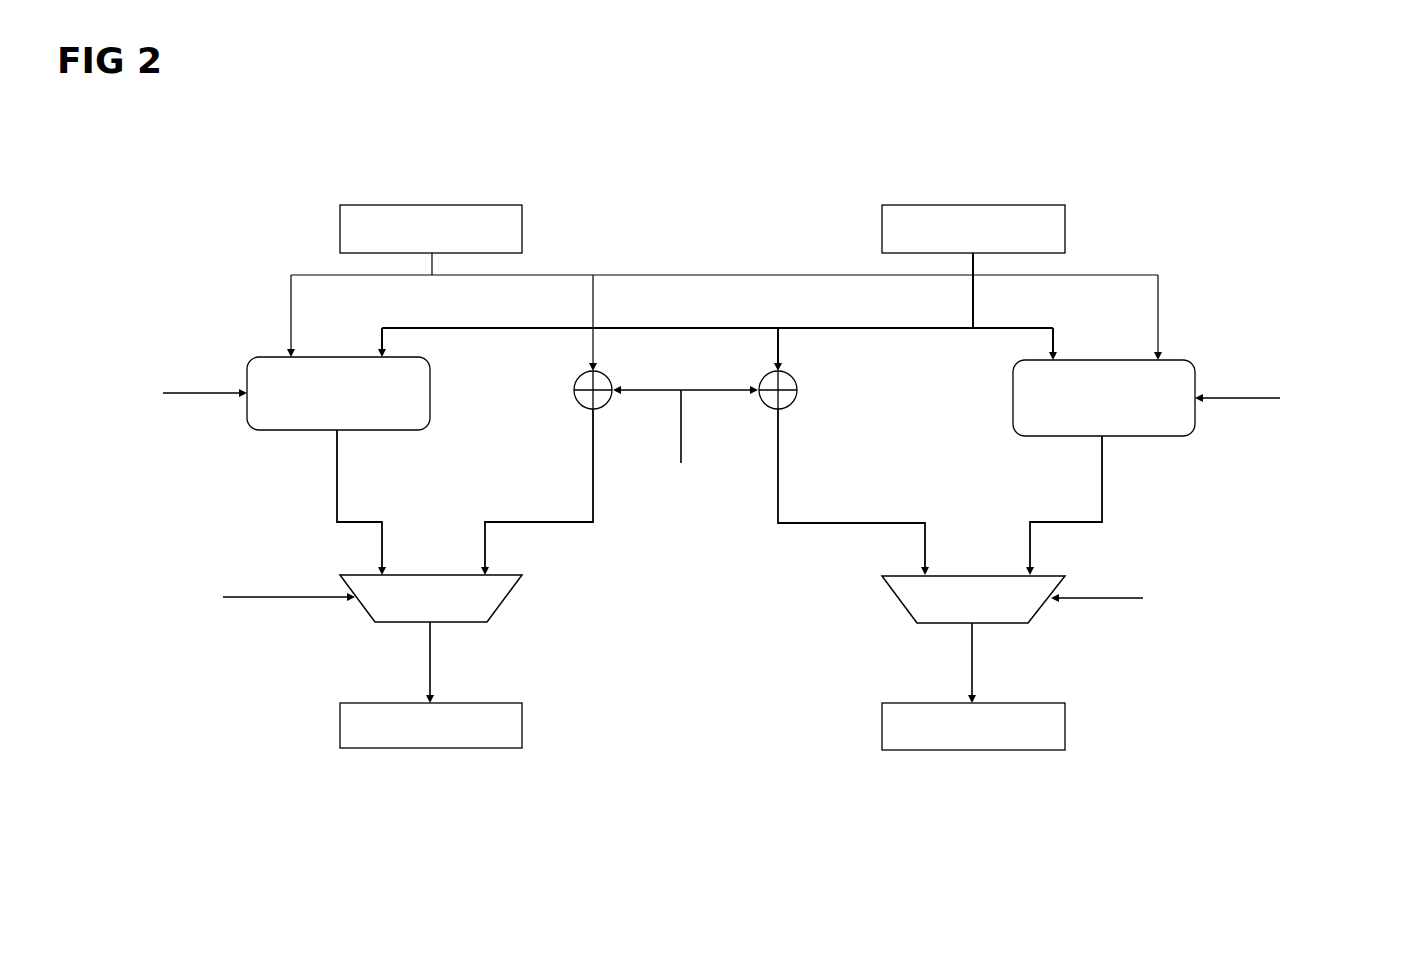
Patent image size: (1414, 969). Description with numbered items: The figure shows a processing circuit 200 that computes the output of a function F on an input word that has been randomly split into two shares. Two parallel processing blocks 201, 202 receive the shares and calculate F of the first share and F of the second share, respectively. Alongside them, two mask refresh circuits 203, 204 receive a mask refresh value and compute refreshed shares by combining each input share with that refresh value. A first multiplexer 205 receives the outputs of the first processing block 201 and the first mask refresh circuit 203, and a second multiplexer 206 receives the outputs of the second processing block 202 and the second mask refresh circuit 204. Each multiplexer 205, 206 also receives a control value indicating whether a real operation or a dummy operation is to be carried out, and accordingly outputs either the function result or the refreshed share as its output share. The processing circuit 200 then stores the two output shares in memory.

The processing circuit 200 is at (1238, 112).
The first processing block 201 is at (430, 387).
The second processing block 202 is at (1190, 362).
The first mask refresh circuit 203 is at (605, 373).
The second mask refresh circuit 204 is at (792, 382).
The first multiplexer 205 is at (498, 607).
The second multiplexer 206 is at (907, 607).